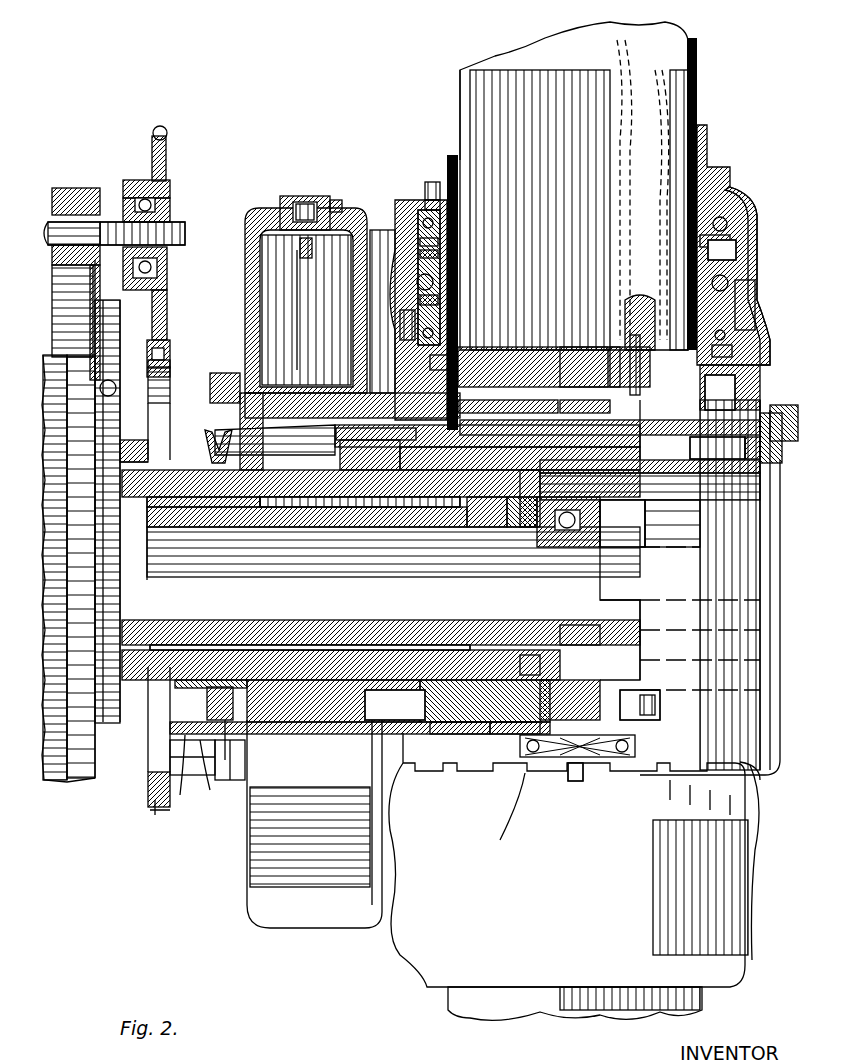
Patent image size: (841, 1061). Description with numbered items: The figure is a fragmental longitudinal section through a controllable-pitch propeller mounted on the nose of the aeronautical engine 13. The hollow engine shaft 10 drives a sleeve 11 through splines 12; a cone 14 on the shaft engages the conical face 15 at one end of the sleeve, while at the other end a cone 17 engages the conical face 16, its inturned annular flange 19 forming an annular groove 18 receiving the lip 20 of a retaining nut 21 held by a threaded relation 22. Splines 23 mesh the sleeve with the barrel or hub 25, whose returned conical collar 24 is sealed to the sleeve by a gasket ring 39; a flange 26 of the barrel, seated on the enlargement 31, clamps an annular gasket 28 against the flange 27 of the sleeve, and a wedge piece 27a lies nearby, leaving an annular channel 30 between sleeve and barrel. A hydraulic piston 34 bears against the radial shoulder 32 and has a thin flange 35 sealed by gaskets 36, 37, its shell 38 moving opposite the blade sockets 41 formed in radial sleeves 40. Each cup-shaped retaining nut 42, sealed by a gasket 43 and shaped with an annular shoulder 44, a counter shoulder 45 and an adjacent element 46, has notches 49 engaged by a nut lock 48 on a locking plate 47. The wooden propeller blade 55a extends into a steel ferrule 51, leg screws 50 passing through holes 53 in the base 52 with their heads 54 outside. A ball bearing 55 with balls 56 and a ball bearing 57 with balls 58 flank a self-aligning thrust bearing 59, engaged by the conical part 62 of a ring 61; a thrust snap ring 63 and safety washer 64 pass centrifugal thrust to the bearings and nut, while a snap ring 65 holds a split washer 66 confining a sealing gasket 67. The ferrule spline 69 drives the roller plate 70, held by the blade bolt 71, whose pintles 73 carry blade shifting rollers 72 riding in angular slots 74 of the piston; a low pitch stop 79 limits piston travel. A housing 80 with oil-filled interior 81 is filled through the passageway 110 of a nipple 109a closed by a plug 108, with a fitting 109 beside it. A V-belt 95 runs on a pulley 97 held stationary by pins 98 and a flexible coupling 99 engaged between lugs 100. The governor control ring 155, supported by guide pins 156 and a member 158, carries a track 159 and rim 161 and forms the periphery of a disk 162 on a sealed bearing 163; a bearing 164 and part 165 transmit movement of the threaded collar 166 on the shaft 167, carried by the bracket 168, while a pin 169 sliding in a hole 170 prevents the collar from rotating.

The hollow engine shaft 10 is at (155, 715).
The sleeve 11 is at (215, 515).
The splines 12 is at (300, 625).
The nose of the aeronautical engine 13 is at (75, 780).
The cone 14 is at (139, 497).
The conical face 15 is at (168, 510).
The conical face 16 is at (462, 470).
The cone 17 is at (465, 728).
The annular groove 18 is at (478, 470).
The inturned annular flange 19 is at (543, 665).
The encased flange or lip 20 is at (500, 728).
The retaining nut 21 is at (592, 652).
The removably threaded relation 22 is at (535, 530).
The splines 23 is at (288, 570).
The returned conical collar 24 is at (315, 690).
The barrel or hub 25 is at (240, 425).
The flange 26 is at (745, 400).
The flange 27 is at (795, 405).
The wedge 27a is at (280, 460).
The annular gasket 28 is at (760, 622).
The annular space or channel 30 is at (395, 705).
The enlargement 31 is at (775, 500).
The radial shoulder 32 is at (745, 447).
The hydraulic piston 34 is at (510, 370).
The flange of reduced thickness 35 is at (405, 440).
The gasket 36 is at (443, 323).
The gasket 37 is at (445, 450).
The shell of the piston 38 is at (512, 535).
The gasket ring 39 is at (211, 766).
The sleeves 40 is at (345, 395).
The blade receiving and holding sockets 41 is at (720, 392).
The blade retaining cup-shaped nut 42 is at (438, 256).
The fluid seal making gasket 43 is at (400, 338).
The annular shoulder 44 is at (405, 225).
The counter shoulder 45 is at (740, 200).
The ring 46 is at (756, 320).
The locking plate 47 is at (635, 760).
The nut lock 48 is at (575, 785).
The notches 49 is at (506, 819).
The leg screws 50 is at (628, 320).
The steel ferrule 51 is at (458, 198).
The base 52 is at (586, 347).
The holes 53 is at (620, 360).
The heads 54 is at (690, 462).
The ball bearing 55 is at (435, 282).
The propeller blade 55a is at (525, 55).
The balls 56 is at (712, 290).
The ball bearing 57 is at (758, 208).
The balls 58 is at (713, 222).
The two-piece self-aligning thrust bearing 59 is at (438, 300).
The ring 61 is at (740, 250).
The conical part 62 is at (440, 225).
The thrust snap ring 63 is at (740, 345).
The safety washer 64 is at (740, 355).
The snap ring 65 is at (447, 160).
The split washer 66 is at (425, 185).
The sealing gasket 67 is at (425, 203).
The spline 69 is at (440, 362).
The roller plate 70 is at (474, 321).
The blade bolt 71 is at (568, 400).
The blade shifting rollers 72 is at (660, 505).
The pintles 73 is at (610, 434).
The angular slots 74 is at (722, 470).
The low pitch stop 79 is at (355, 690).
The housing 80 is at (245, 300).
The interior 81 is at (306, 310).
The V-belt 95 is at (215, 715).
The pulley 97 is at (210, 708).
The pins 98 is at (134, 440).
The flexible coupling 99 is at (127, 465).
The lugs 100 is at (170, 375).
The plug 108 is at (282, 210).
The pin 109 is at (312, 250).
The nipple 109a is at (340, 200).
The passageway 110 is at (300, 262).
The annular member or ring 155 is at (150, 765).
The guide pins 156 is at (150, 830).
The block 158 is at (225, 373).
The annular peripheral track 159 is at (150, 812).
The rim 161 is at (162, 330).
The disk 162 is at (168, 165).
The permanently sealed bearing 163 is at (165, 205).
The bearing 164 is at (152, 267).
The hub 165 is at (133, 290).
The threaded collar 166 is at (160, 215).
The shaft 167 is at (188, 234).
The bracket on the engine nose 168 is at (57, 268).
The pin 169 is at (103, 240).
The hole 170 is at (70, 205).